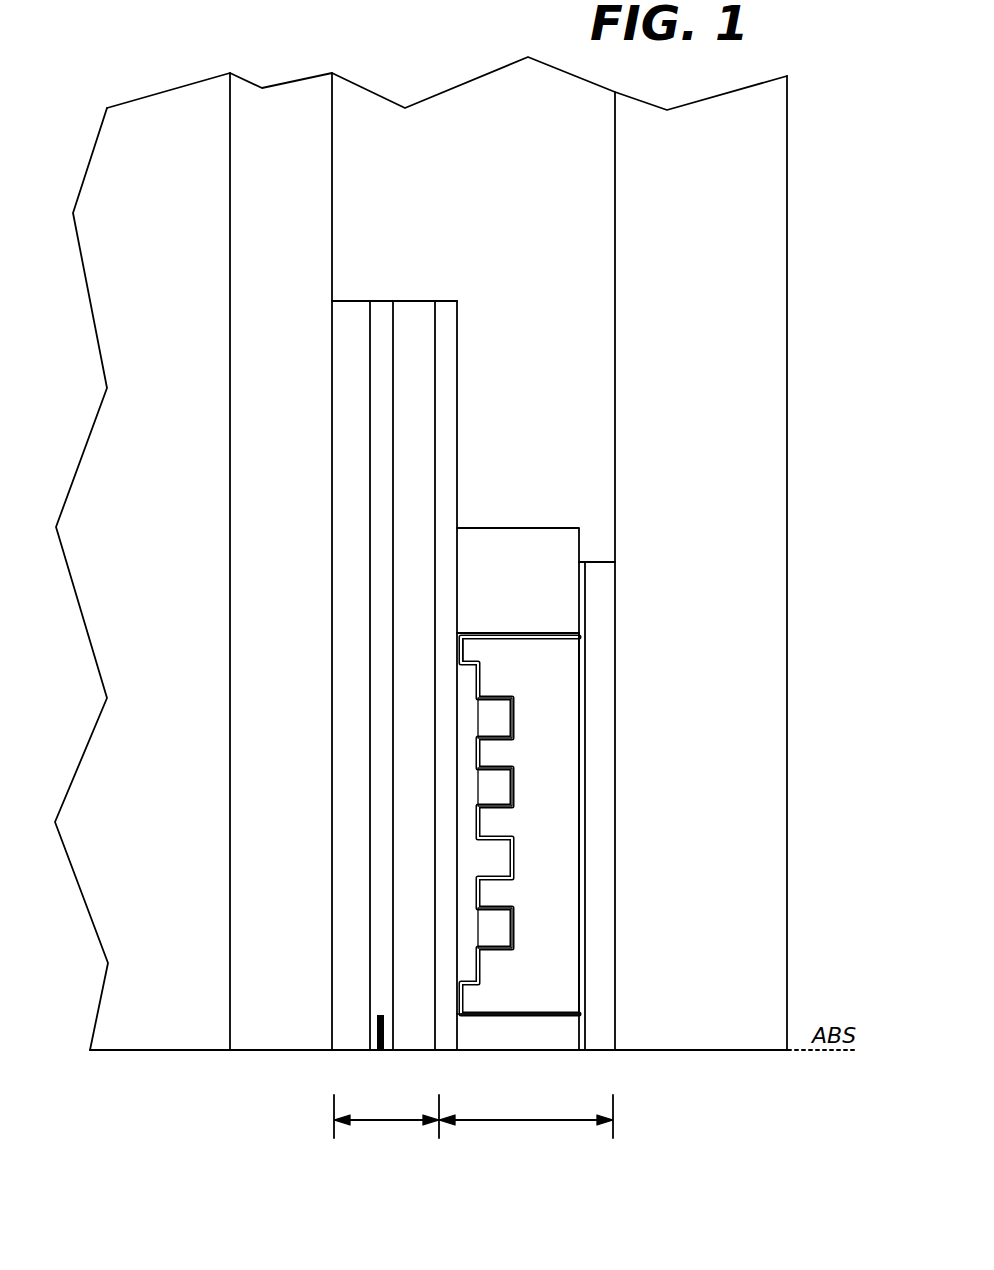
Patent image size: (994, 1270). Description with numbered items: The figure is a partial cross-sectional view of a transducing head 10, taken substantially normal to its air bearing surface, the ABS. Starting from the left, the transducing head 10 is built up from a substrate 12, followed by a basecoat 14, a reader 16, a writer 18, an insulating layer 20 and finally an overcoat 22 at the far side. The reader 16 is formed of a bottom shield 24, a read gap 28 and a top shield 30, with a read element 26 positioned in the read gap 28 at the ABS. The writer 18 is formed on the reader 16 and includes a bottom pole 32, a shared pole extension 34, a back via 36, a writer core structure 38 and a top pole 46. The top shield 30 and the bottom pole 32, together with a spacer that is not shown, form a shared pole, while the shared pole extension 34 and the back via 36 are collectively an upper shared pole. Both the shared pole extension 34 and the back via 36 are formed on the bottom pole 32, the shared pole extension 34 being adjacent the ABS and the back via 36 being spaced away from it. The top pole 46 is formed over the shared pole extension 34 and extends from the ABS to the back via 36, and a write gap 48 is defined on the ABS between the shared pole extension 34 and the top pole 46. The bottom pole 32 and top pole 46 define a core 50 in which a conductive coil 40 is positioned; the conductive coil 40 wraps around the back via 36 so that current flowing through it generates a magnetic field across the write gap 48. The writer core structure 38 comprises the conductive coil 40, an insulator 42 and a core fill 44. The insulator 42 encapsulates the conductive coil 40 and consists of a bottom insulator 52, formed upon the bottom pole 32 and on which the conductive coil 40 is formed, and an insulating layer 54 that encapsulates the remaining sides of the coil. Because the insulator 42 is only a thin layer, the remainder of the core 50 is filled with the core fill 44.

The transducing head 10 is at (132, 80).
The substrate 12 is at (143, 427).
The basecoat 14 is at (283, 130).
The reader 16 is at (386, 1125).
The writer 18 is at (526, 1125).
The insulating layer 20 is at (453, 158).
The overcoat 22 is at (765, 785).
The bottom shield 24 is at (352, 722).
The read element 26 is at (379, 1053).
The read gap 28 is at (382, 630).
The top shield 30 is at (410, 570).
The bottom pole 32 is at (448, 457).
The shared pole extension 34 is at (513, 1038).
The back via 36 is at (555, 557).
The writer core structure 38 is at (516, 622).
The conductive coil 40 is at (500, 790).
The insulator 42 is at (460, 816).
The core fill 44 is at (560, 840).
The top pole 46 is at (600, 885).
The write gap 48 is at (583, 1025).
The core 50 is at (505, 997).
The bottom insulator 52 is at (467, 858).
The insulating layer 54 is at (515, 928).